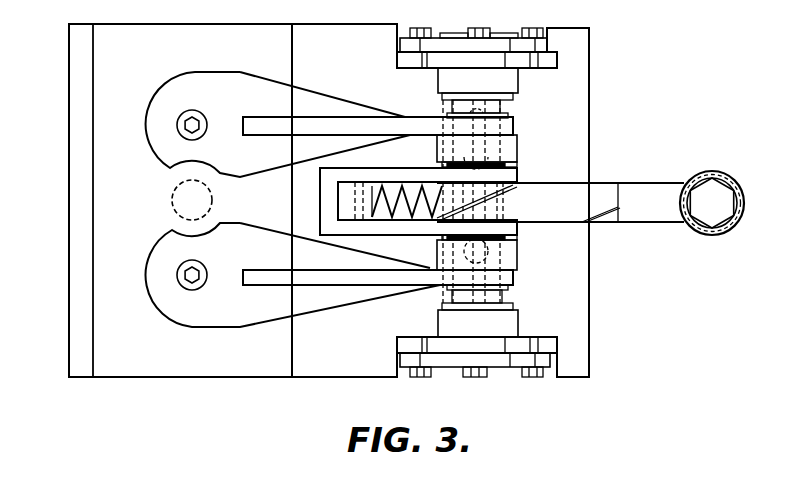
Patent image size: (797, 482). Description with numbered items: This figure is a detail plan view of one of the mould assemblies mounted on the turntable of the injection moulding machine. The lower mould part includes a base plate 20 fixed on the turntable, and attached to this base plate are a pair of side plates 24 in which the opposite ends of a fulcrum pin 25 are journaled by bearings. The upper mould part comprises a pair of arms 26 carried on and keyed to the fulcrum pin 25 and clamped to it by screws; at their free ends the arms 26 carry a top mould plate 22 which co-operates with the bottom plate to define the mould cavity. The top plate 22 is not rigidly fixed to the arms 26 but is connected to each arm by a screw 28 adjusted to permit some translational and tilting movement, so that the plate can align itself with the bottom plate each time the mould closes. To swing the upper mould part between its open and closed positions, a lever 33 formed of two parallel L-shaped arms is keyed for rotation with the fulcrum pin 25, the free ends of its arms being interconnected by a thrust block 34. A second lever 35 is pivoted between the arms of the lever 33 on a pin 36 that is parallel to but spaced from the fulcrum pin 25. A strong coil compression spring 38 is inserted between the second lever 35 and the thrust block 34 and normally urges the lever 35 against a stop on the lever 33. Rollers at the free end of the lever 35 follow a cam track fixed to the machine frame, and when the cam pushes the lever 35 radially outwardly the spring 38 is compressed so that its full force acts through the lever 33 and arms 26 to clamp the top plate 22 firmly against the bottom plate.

The base plate 20 is at (77, 260).
The top mould plate 22 is at (107, 290).
The side plates 24 is at (555, 60).
The fulcrum pin 25 is at (497, 108).
The arms 26 is at (257, 93).
The screw 28 is at (192, 110).
The lever 33 is at (388, 231).
The thrust block 34 is at (216, 191).
The second lever 35 is at (548, 195).
The pin 36 is at (486, 258).
The coil compression spring 38 is at (415, 180).